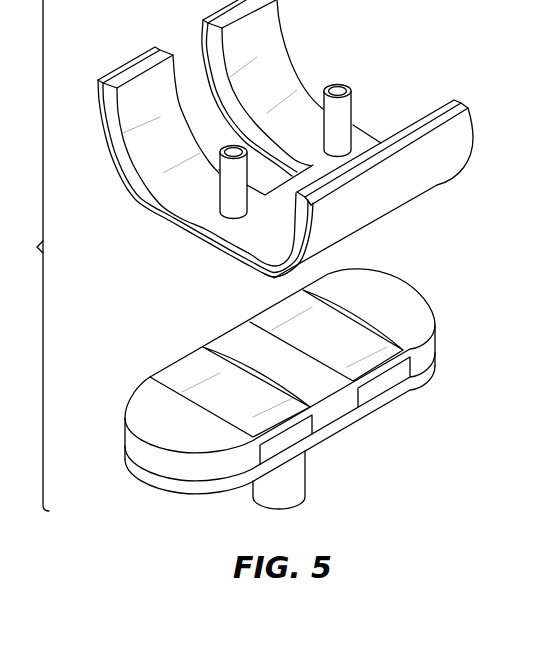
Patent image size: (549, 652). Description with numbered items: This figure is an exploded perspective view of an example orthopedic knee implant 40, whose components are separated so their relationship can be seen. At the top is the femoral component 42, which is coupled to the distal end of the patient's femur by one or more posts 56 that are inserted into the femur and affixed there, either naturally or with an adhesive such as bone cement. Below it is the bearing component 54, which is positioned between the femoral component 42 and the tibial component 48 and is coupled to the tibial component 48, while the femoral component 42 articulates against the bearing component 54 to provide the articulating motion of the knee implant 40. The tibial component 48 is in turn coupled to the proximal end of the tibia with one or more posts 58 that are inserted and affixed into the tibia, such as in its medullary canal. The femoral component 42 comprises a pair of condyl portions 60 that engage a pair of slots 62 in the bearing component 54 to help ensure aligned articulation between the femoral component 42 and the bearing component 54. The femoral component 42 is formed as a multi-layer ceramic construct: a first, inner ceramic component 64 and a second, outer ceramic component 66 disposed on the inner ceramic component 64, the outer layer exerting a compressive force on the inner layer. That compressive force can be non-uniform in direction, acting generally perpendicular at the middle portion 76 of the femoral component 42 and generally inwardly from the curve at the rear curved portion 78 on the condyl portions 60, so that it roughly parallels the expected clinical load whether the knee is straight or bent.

The knee implant 40 is at (30, 255).
The femoral component 42 is at (393, 56).
The tibial component 48 is at (383, 395).
The bearing component 54 is at (140, 396).
The posts 56 is at (218, 181).
The posts 58 is at (308, 467).
The condyl portions 60 is at (165, 85).
The slots 62 is at (187, 367).
The first ceramic component 64 is at (163, 207).
The second ceramic component 66 is at (124, 190).
The middle portion 76 is at (203, 240).
The rear curved portion 78 is at (107, 138).